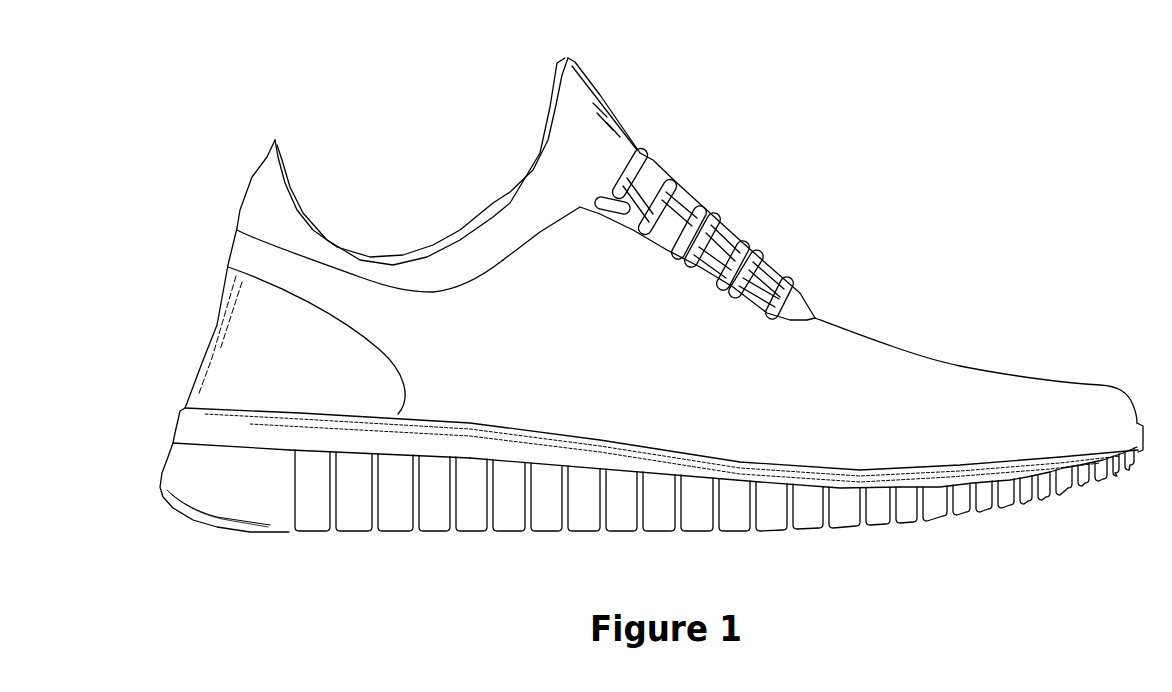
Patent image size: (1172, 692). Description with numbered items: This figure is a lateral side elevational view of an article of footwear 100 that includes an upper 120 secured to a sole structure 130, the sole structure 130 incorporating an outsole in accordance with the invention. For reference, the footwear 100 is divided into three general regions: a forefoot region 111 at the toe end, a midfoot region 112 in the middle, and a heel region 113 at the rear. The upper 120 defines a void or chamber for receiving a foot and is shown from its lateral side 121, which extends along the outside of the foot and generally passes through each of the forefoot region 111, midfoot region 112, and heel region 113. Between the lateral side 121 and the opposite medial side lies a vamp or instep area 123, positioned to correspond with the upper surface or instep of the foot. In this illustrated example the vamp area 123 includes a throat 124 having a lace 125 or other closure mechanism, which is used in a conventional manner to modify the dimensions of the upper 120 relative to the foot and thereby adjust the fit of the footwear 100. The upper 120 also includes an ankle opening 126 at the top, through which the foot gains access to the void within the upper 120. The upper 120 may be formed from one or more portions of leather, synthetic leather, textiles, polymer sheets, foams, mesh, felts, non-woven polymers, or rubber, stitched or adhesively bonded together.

The article of footwear 100 is at (391, 121).
The forefoot region 111 is at (1023, 512).
The midfoot region 112 is at (676, 536).
The heel region 113 is at (313, 540).
The upper 120 is at (500, 233).
The lateral side 121 is at (270, 263).
The vamp area 123 is at (976, 330).
The throat 124 is at (745, 206).
The lace 125 is at (666, 174).
The ankle opening 126 is at (402, 175).
The sole structure 130 is at (168, 395).